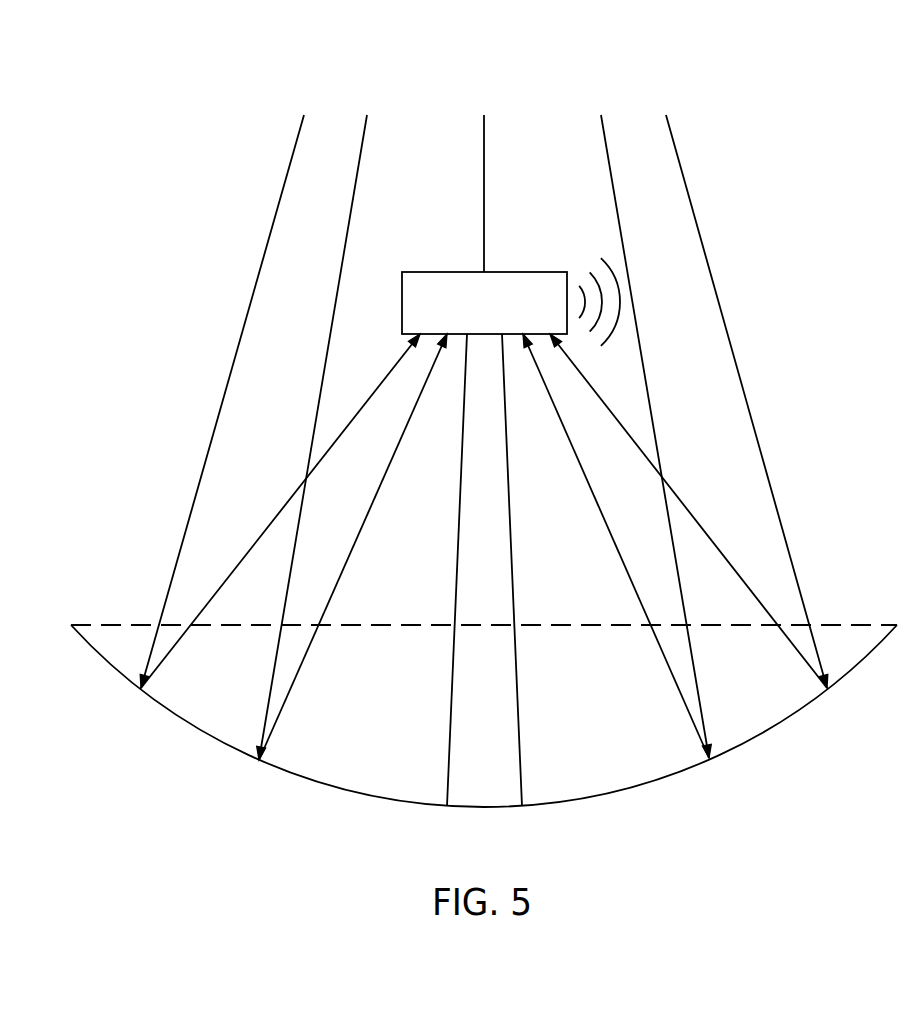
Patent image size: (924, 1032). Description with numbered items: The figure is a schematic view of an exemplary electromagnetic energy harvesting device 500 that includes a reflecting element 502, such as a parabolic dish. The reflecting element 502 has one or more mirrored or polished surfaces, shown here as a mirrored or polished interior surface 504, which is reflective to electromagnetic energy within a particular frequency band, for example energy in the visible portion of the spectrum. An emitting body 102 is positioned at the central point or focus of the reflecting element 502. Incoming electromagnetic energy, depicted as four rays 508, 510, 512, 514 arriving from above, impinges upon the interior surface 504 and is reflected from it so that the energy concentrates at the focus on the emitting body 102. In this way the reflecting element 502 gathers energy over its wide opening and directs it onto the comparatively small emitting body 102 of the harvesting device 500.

The electromagnetic energy harvesting device 500 is at (827, 93).
The emitting body 102 is at (514, 272).
The reflecting element 502 is at (785, 720).
The interior surface 504 is at (857, 660).
The ray 508 is at (245, 320).
The ray 510 is at (323, 368).
The ray 512 is at (645, 370).
The ray 514 is at (725, 322).